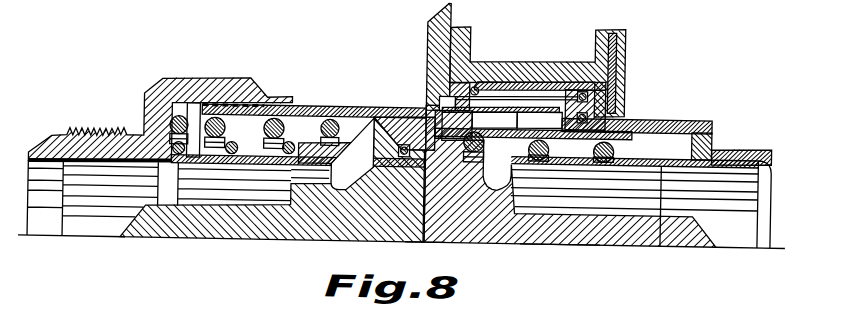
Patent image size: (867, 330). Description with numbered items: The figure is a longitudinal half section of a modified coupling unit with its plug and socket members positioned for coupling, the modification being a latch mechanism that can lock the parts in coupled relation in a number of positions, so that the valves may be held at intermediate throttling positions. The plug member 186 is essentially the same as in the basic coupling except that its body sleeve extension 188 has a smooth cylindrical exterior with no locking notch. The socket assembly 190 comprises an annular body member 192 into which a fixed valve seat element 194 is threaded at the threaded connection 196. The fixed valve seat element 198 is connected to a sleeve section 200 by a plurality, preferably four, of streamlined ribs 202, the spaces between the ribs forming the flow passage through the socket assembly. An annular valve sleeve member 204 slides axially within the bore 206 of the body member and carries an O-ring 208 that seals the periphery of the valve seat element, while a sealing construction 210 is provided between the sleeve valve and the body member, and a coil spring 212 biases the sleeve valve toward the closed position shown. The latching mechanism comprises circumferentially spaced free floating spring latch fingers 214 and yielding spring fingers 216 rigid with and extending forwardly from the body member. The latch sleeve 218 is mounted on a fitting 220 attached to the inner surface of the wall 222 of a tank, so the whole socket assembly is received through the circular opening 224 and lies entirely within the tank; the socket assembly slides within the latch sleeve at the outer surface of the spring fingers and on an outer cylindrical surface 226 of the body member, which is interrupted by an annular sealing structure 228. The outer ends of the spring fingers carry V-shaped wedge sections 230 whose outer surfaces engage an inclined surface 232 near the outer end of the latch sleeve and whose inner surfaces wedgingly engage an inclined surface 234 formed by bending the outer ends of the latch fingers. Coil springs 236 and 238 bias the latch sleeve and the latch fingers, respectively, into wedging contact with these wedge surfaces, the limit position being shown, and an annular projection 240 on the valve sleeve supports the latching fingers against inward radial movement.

The plug member 186 is at (210, 73).
The body sleeve extension 188 is at (320, 110).
The socket assembly 190 is at (635, 252).
The annular body member 192 is at (657, 118).
The fixed valve seat element 194 is at (558, 242).
The threaded connection 196 is at (730, 145).
The fixed valve seat element 198 is at (434, 243).
The sleeve section 200 is at (652, 188).
The streamlined ribs 202 is at (663, 194).
The annular valve sleeve member 204 is at (471, 175).
The bore 206 is at (677, 120).
The O-ring 208 is at (401, 149).
The sealing construction 210 is at (600, 104).
The coil spring 212 is at (606, 148).
The free floating spring latch fingers 214 is at (483, 166).
The yielding spring fingers 216 is at (507, 81).
The latch sleeve 218 is at (537, 80).
The fitting 220 is at (467, 32).
The wall 222 is at (424, 37).
The circular opening 224 is at (447, 80).
The outer cylindrical surface 226 is at (608, 82).
The annular sealing structure 228 is at (603, 88).
The V-shaped wedge sections 230 is at (448, 92).
The inclined surface 232 is at (447, 100).
The inclined surface 234 is at (405, 132).
The coil spring 236 is at (515, 95).
The coil spring 238 is at (539, 121).
The annular projection 240 is at (494, 120).